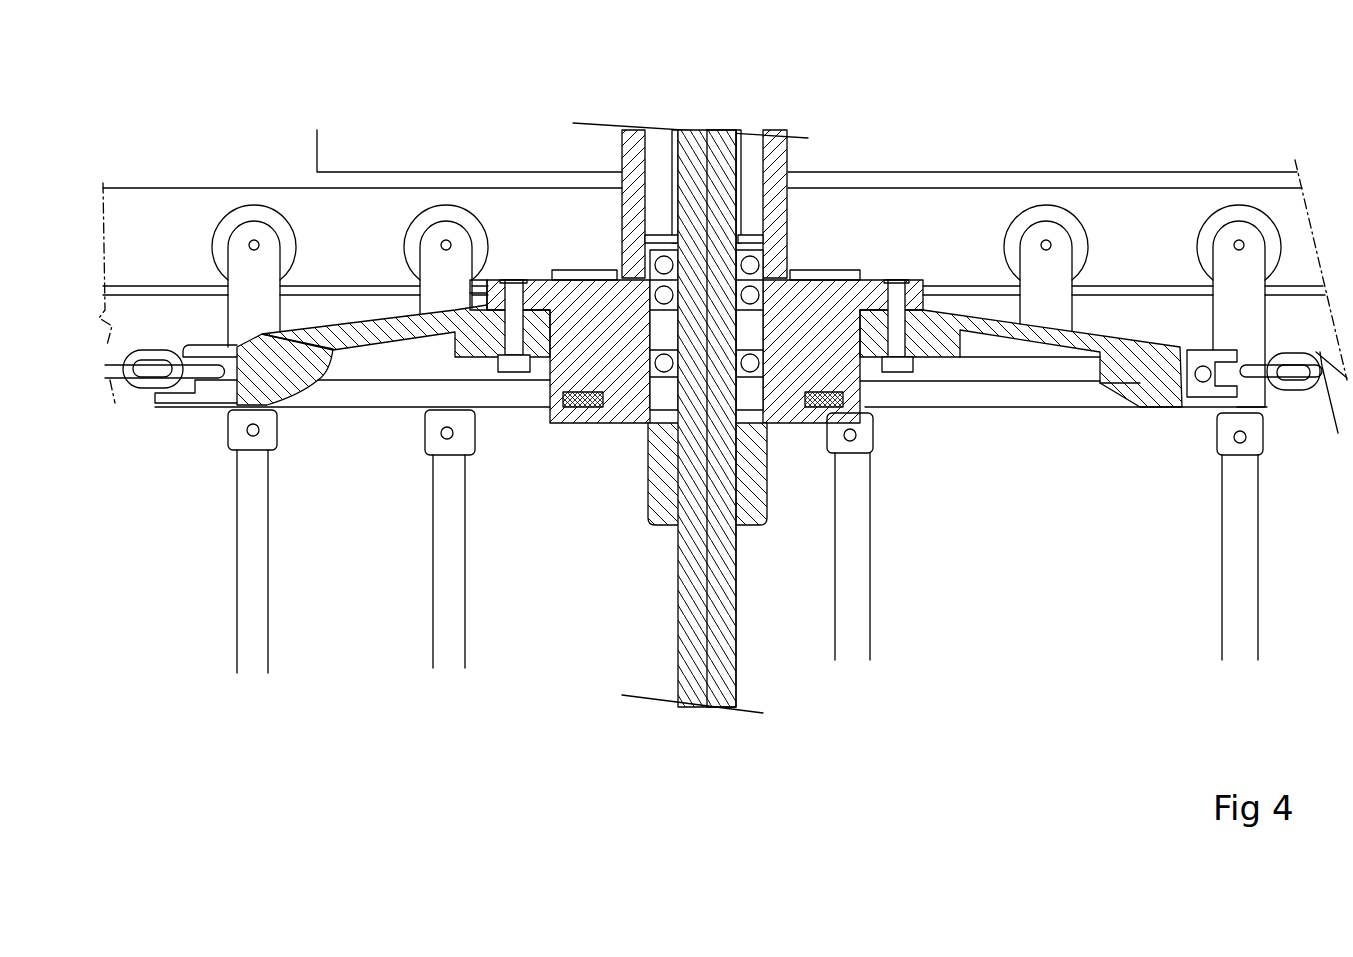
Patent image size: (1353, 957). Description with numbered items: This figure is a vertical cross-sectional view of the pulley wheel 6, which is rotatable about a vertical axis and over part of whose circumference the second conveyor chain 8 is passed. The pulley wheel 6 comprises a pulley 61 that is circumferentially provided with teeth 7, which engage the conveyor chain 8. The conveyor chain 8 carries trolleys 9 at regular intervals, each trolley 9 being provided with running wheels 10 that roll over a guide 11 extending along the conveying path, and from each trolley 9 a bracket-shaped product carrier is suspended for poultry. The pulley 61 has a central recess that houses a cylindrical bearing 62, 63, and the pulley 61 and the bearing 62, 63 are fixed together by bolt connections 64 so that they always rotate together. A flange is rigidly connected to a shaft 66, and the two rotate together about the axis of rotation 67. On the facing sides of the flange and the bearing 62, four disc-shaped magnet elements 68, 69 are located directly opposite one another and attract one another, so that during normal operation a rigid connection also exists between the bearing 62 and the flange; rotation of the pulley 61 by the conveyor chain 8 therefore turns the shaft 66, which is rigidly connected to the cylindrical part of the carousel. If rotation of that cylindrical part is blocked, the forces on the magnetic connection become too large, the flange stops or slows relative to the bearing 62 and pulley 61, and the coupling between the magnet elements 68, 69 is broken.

The pulley wheel 6 is at (367, 682).
The teeth 7 is at (190, 383).
The second conveyor chain 8 is at (137, 392).
The trolley 9 is at (260, 310).
The running wheel 10 is at (240, 217).
The guide 11 is at (937, 230).
The pulley 61 is at (326, 358).
The bearing 62 is at (580, 313).
The bearing 63 is at (770, 287).
The bolt connection 64 is at (905, 337).
The shaft 66 is at (677, 595).
The axis of rotation 67 is at (708, 585).
The magnet element 68 is at (650, 457).
The magnet element 69 is at (583, 397).